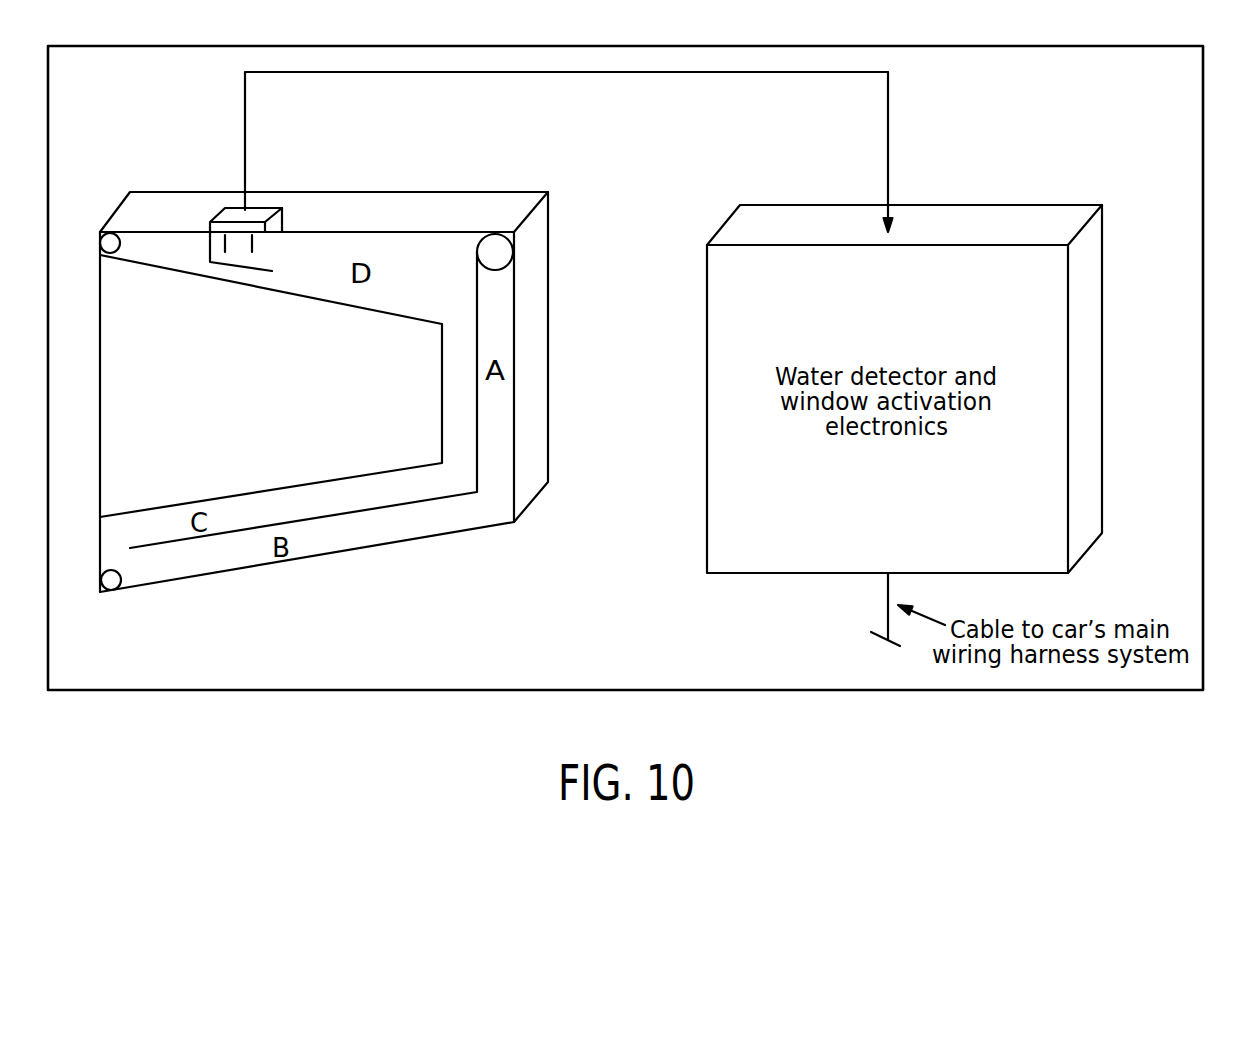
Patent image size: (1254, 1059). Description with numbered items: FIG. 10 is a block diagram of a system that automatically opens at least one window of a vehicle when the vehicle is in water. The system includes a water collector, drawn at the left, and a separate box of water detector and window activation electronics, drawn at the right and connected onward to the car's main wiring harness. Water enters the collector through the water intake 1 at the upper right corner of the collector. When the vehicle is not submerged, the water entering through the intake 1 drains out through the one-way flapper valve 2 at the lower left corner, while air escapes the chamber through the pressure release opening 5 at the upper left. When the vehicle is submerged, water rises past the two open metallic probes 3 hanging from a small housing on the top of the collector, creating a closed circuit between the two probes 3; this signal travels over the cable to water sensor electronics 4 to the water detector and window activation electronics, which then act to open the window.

The water intake 1 is at (528, 245).
The one-way flapper valve 2 is at (123, 606).
The two open metallic probes 3 is at (251, 236).
The cable to water sensor electronics 4 is at (261, 134).
The pressure release opening 5 is at (109, 218).